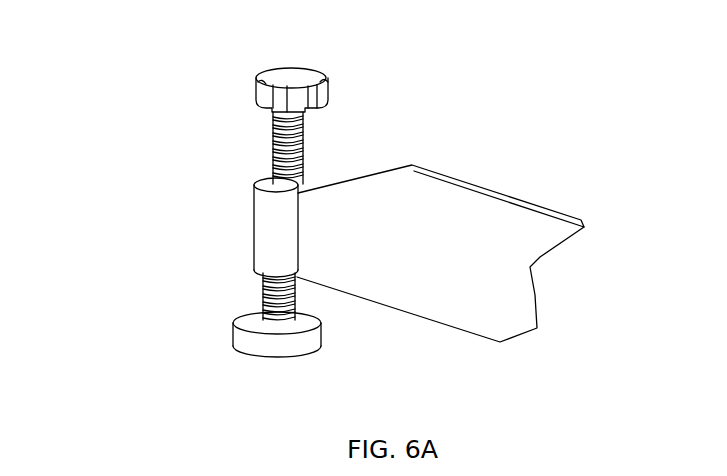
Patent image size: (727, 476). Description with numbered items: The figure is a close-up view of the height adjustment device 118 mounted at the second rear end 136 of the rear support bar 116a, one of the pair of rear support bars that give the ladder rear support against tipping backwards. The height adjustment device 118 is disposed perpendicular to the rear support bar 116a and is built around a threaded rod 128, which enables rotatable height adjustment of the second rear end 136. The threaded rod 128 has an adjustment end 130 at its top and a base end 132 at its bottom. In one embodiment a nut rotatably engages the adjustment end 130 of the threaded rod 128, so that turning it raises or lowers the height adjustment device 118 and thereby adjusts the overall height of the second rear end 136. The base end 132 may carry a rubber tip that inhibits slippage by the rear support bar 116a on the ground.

The height adjustment device 118 is at (88, 90).
The threaded rod 128 is at (262, 155).
The adjustment end 130 is at (330, 107).
The base end 132 is at (248, 342).
The second rear end 136 is at (250, 235).
The rear support bar 116a is at (558, 212).